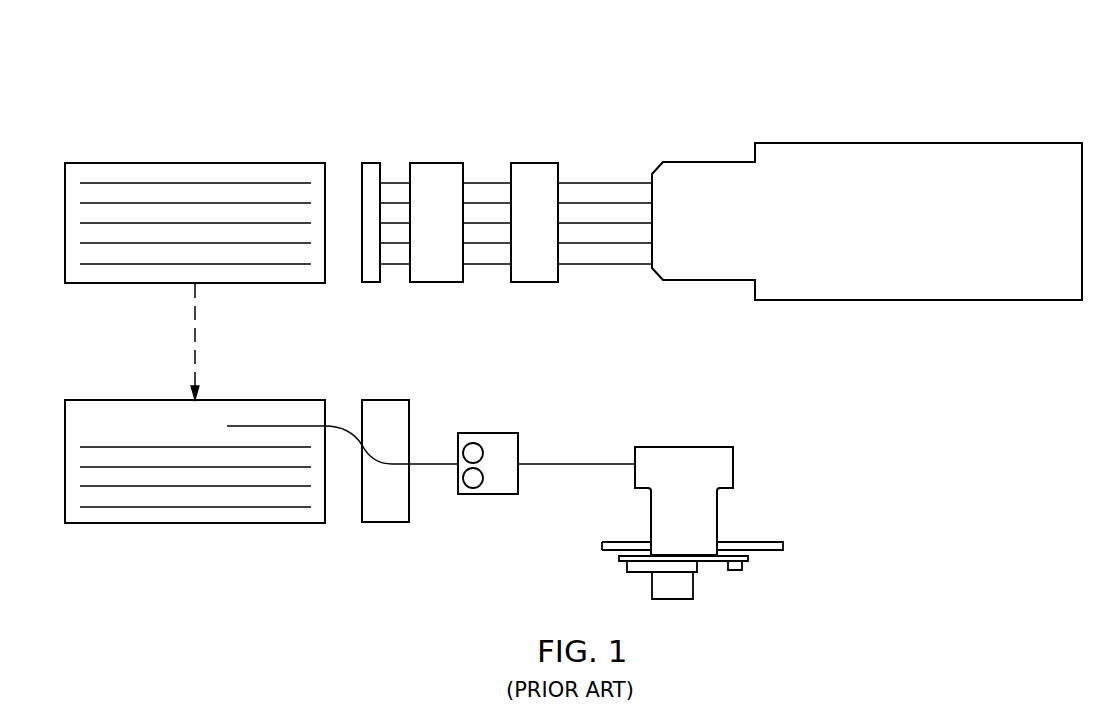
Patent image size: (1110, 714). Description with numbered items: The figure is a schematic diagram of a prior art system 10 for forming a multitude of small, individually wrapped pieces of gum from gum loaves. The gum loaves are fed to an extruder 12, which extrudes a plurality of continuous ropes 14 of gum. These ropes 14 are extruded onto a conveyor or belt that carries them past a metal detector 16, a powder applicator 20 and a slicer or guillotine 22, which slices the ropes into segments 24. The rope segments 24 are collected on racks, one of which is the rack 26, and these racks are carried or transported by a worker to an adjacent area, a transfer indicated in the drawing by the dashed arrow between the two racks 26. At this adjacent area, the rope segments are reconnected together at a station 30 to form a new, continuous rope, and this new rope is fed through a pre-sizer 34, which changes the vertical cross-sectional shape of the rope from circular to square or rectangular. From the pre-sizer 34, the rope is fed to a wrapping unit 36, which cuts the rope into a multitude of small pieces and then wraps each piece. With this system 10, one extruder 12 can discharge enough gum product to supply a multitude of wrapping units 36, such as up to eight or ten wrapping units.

The prior art system 10 is at (876, 91).
The extruder 12 is at (974, 142).
The continuous ropes 14 is at (601, 180).
The metal detector 16 is at (528, 162).
The powder applicator 20 is at (440, 162).
The slicer or guillotine 22 is at (372, 162).
The segments 24 is at (210, 176).
The rack 26 is at (112, 162).
The station 30 is at (380, 399).
The pre-sizer 34 is at (496, 432).
The wrapping unit 36 is at (711, 446).